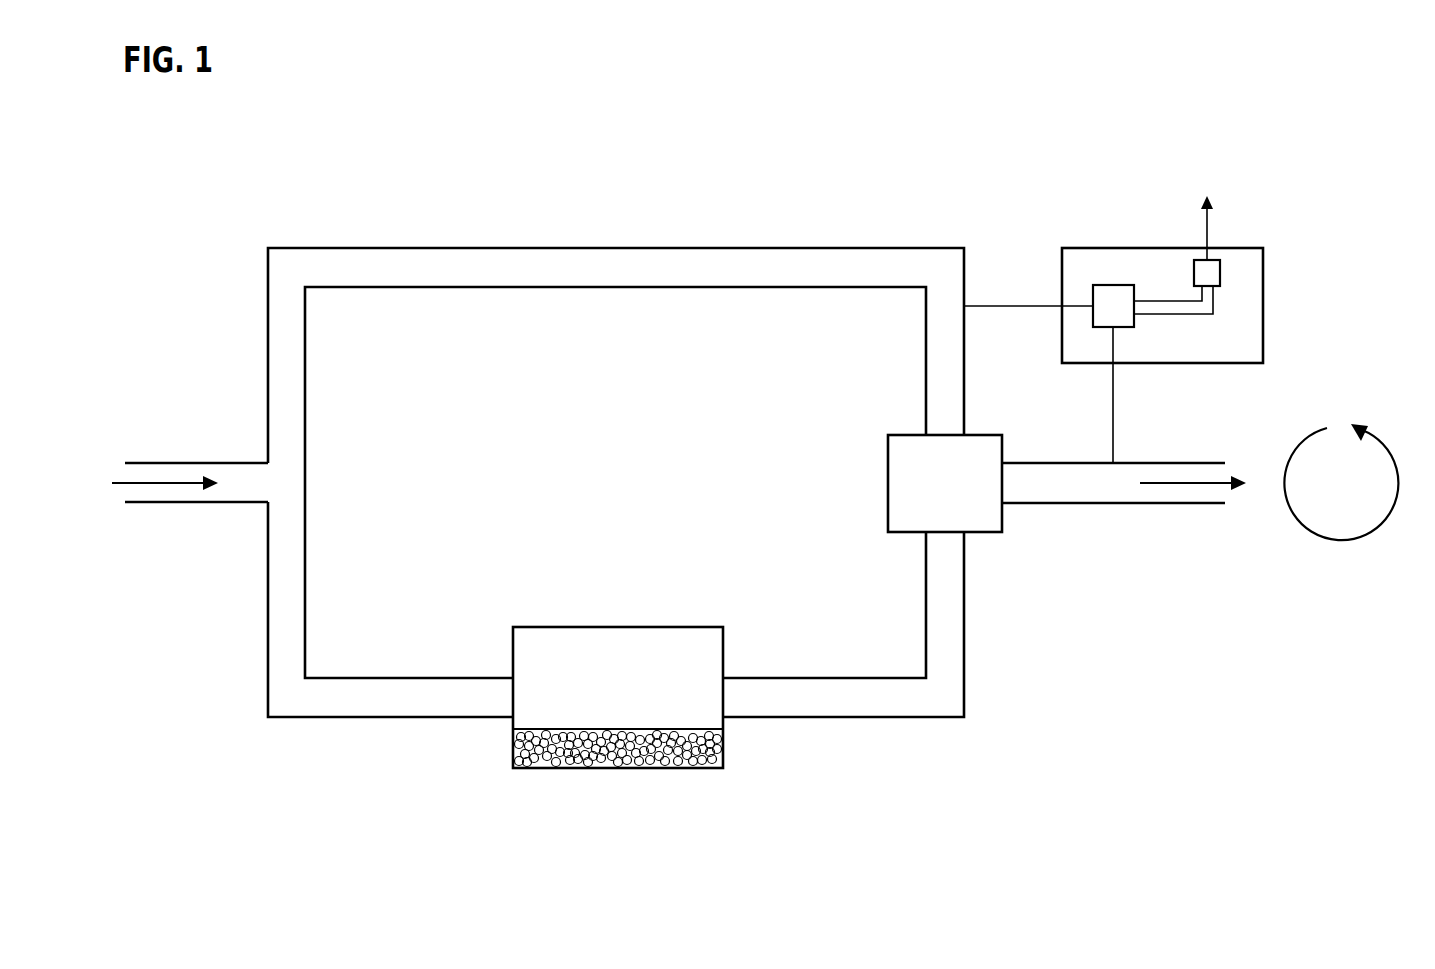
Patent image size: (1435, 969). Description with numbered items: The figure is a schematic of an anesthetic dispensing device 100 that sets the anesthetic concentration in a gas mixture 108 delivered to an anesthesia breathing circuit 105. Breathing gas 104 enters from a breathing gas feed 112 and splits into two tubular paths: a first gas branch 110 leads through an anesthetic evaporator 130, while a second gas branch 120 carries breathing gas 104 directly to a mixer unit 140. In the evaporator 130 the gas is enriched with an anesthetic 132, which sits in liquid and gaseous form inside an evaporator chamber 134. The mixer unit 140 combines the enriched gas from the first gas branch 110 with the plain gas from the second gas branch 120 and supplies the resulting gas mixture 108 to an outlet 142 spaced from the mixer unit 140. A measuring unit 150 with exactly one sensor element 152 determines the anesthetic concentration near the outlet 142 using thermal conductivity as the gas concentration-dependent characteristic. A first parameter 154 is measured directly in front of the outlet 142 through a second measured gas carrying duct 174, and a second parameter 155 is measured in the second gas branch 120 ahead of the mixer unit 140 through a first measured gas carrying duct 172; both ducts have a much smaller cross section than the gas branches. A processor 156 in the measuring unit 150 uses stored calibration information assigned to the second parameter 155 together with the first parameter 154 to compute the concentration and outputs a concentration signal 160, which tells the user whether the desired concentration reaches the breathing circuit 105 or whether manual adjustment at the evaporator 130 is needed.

The anesthetic dispensing device 100 is at (1350, 180).
The breathing gas 104 is at (178, 483).
The anesthesia breathing circuit 105 is at (1342, 540).
The gas mixture 108 is at (1165, 488).
The first gas branch 110 is at (401, 697).
The breathing gas feed 112 is at (137, 492).
The second gas branch 120 is at (400, 268).
The anesthetic evaporator 130 is at (680, 710).
The anesthetic 132 is at (625, 757).
The evaporator chamber 134 is at (550, 710).
The mixer unit 140 is at (924, 500).
The outlet 142 is at (1215, 493).
The measuring unit 150 is at (1092, 248).
The sensor element 152 is at (1111, 298).
The first parameter 154 is at (1215, 308).
The second parameter 155 is at (1157, 300).
The processor 156 is at (1216, 273).
The concentration signal 160 is at (1208, 225).
The first measured gas carrying duct 172 is at (1010, 305).
The second measured gas carrying duct 174 is at (1113, 398).